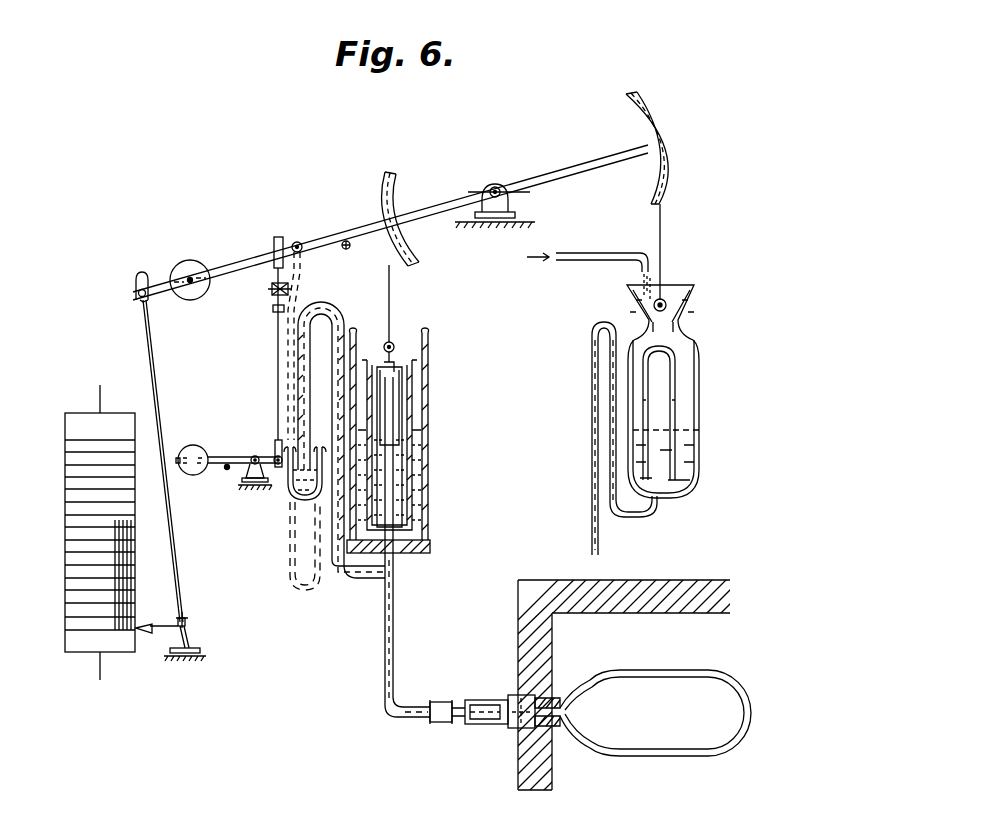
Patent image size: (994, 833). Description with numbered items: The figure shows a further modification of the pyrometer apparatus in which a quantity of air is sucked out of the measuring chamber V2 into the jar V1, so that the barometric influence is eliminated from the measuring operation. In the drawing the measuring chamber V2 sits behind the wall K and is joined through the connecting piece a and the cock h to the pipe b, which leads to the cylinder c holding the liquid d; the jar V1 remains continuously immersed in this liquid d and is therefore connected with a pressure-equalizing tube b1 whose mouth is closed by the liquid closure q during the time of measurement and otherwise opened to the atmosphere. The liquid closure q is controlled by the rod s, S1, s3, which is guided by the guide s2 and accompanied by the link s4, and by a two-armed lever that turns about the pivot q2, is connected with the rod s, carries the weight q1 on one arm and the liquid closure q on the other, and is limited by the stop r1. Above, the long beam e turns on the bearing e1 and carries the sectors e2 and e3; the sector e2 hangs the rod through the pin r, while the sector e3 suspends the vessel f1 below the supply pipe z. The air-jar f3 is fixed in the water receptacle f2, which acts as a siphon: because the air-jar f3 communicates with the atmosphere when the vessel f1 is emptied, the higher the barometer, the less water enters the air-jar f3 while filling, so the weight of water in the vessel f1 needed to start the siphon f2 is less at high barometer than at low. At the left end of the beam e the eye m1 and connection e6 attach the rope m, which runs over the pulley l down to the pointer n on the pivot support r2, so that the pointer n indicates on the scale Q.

The lever beam e is at (390, 215).
The lever pivot bearing e1 is at (495, 193).
The left sector of lever e2 is at (390, 262).
The right sector of lever e3 is at (647, 201).
The hook connection e6 is at (150, 302).
The eye of rope m1 is at (135, 292).
The rope m is at (163, 461).
The pulley l is at (199, 270).
The pointer n is at (162, 616).
The pointer pivot support r2 is at (200, 644).
The scale Q is at (135, 470).
The rod section S1 is at (282, 240).
The rod s is at (277, 388).
The guide s2 is at (268, 289).
The rod section s3 is at (273, 308).
The link s4 is at (304, 341).
The pin r is at (350, 256).
The liquid closure q is at (288, 486).
The weight q1 is at (196, 448).
The pivot q2 is at (252, 457).
The stop r1 is at (219, 478).
The tube b1 is at (341, 448).
The pipe b is at (394, 398).
The lever c is at (396, 434).
The liquid d is at (428, 522).
The jar V1 is at (404, 468).
The supply pipe z is at (588, 265).
The vessel f1 is at (684, 418).
The air-jar f3 is at (663, 378).
The receptacle for water f2 is at (593, 412).
The connecting piece a is at (504, 700).
The stopcock h is at (520, 726).
The wall K is at (646, 687).
The measuring chamber V2 is at (655, 713).